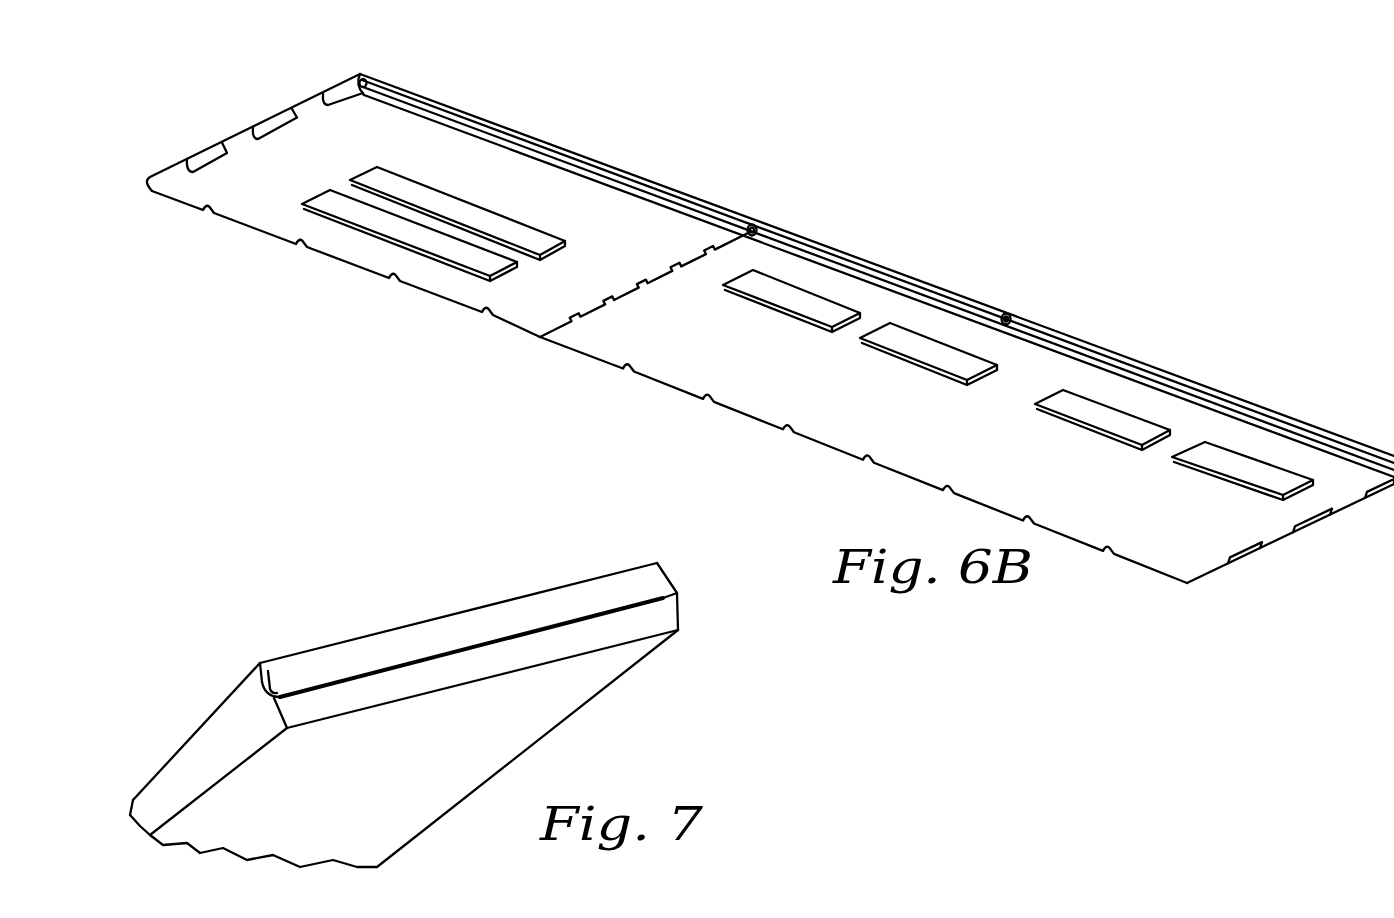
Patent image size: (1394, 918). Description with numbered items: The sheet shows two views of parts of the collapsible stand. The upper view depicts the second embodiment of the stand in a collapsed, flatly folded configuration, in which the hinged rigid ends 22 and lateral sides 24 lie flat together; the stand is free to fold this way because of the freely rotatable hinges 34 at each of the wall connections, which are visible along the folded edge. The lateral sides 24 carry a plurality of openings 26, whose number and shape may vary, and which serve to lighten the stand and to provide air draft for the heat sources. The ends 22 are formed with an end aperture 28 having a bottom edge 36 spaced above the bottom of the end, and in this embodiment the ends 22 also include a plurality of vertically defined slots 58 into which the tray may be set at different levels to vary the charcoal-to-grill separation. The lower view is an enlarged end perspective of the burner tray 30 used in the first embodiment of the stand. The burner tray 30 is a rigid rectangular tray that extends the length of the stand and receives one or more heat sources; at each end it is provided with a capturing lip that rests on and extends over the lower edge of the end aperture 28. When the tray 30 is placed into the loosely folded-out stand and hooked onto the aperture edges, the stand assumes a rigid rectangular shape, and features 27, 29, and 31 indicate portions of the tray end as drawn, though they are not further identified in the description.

In FIG. 6B, the end 22 is at (530, 184).
In FIG. 6B, the lateral side 24 is at (867, 296).
In FIG. 6B, the opening 26 is at (910, 335).
In FIG. 6B, the end aperture 28 is at (512, 272).
In FIG. 6B, the hinge 34 is at (344, 87).
In FIG. 6B, the bottom edge 36 is at (368, 228).
In FIG. 6B, the vertically defined slot 58 is at (442, 192).
In FIG. 7, the end face 27 is at (247, 723).
In FIG. 7, the hinge flange 29 is at (657, 618).
In FIG. 7, the burner tray 30 is at (173, 770).
In FIG. 7, the hinge bar 31 is at (472, 618).